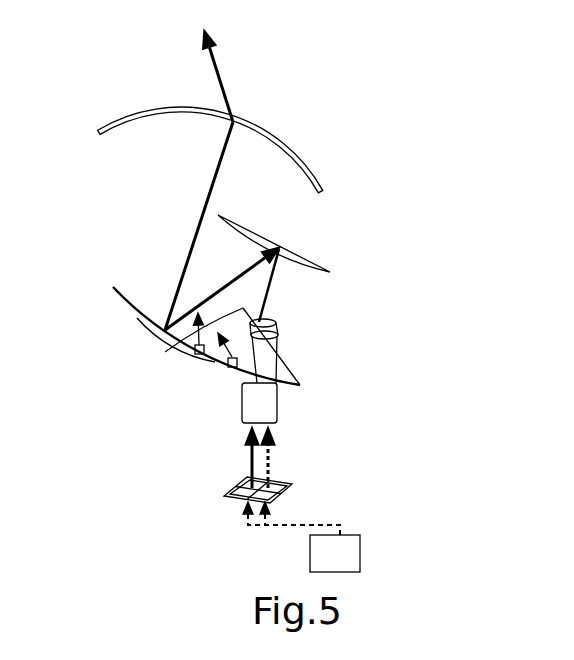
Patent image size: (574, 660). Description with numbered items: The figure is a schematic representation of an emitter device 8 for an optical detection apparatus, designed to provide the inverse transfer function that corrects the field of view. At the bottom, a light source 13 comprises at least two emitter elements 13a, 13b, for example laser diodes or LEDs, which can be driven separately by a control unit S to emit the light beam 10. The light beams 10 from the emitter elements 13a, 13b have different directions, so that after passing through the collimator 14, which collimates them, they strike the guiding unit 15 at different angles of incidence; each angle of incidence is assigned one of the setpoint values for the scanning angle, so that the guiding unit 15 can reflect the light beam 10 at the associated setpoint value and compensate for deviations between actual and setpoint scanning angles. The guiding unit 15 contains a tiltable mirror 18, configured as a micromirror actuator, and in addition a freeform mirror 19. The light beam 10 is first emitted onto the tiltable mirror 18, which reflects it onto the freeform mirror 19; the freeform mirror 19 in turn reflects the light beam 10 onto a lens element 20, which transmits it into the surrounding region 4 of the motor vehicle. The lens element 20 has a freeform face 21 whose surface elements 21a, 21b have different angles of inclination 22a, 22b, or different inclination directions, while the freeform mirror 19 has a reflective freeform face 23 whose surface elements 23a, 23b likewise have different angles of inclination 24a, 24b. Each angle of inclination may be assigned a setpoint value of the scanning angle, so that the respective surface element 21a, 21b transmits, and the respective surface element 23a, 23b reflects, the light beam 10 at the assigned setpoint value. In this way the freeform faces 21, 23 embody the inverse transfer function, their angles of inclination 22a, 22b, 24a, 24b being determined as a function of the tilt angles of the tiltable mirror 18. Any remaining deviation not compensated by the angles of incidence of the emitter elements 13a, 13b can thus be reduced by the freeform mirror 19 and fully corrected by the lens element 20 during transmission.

The surrounding region 4 is at (141, 19).
The emitter device 8 is at (402, 169).
The light beam 10 is at (219, 80).
The light source 13 is at (225, 494).
The emitter element 13a is at (232, 500).
The emitter element 13b is at (288, 492).
The collimator 14 is at (270, 408).
The guiding unit 15 is at (367, 258).
The tiltable mirror 18 is at (300, 248).
The freeform mirror 19 is at (150, 335).
The lens element 20 is at (112, 130).
The freeform face 21 is at (203, 130).
The surface element 21a is at (168, 143).
The surface element 21b is at (305, 163).
The angle of inclination 22a is at (160, 138).
The angle of inclination 22b is at (288, 183).
The reflective freeform face 23 is at (260, 356).
The surface element 23a is at (195, 356).
The surface element 23b is at (229, 367).
The angle of inclination 24a is at (175, 349).
The angle of inclination 24b is at (258, 322).
The control unit S is at (360, 552).